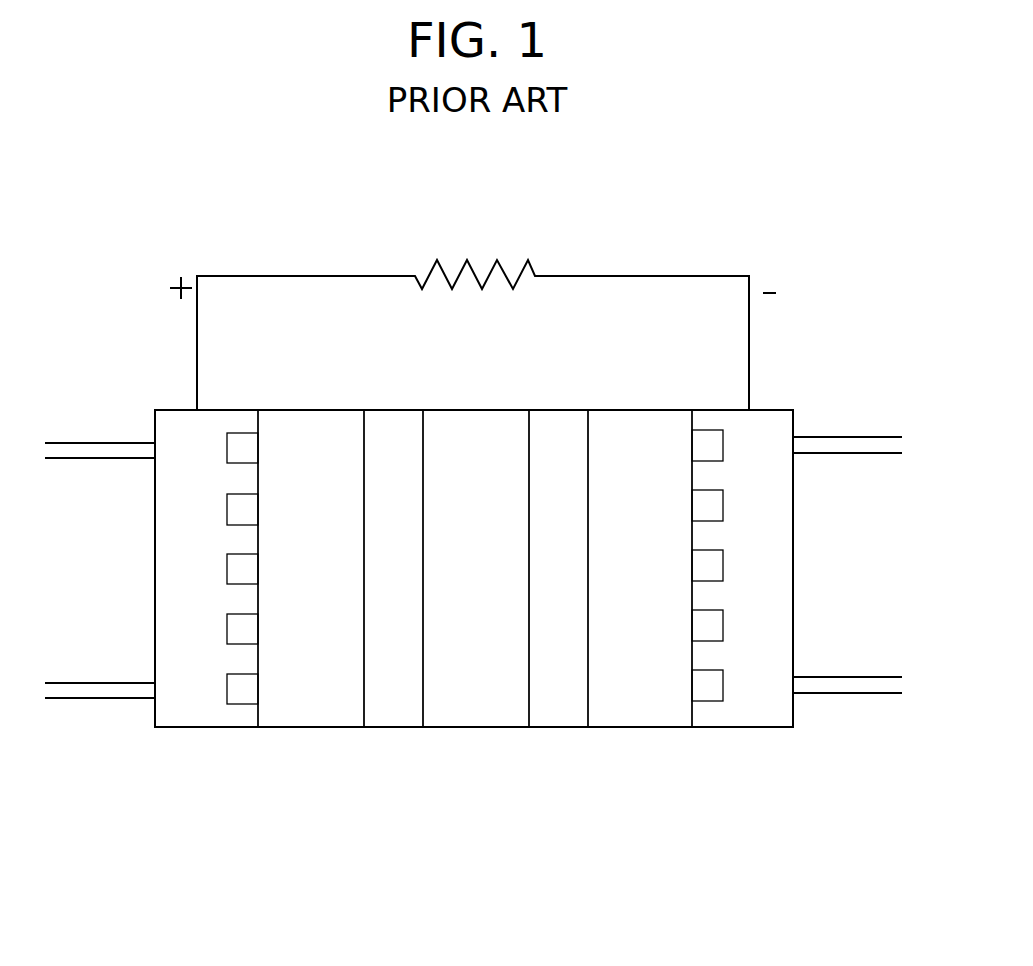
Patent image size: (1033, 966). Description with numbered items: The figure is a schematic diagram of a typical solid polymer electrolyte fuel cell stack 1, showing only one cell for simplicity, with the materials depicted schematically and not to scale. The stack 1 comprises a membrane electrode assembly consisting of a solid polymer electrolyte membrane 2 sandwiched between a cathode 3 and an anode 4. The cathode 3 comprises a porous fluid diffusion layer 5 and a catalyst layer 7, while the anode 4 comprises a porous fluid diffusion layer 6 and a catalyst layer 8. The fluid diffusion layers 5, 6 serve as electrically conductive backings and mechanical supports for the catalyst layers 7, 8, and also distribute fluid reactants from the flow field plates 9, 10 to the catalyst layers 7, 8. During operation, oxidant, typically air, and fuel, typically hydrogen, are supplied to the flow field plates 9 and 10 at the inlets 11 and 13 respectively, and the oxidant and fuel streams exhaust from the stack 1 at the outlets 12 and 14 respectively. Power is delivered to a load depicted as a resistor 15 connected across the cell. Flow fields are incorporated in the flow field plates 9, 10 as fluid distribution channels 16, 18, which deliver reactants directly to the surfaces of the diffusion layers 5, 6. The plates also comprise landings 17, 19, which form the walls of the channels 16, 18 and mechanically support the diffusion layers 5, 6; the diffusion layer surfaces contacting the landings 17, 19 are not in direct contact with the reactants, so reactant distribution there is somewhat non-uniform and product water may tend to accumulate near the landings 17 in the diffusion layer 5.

The stack 1 is at (836, 267).
The solid polymer electrolyte membrane 2 is at (477, 713).
The cathode 3 is at (341, 591).
The anode 4 is at (608, 591).
The porous fluid diffusion layer 5 is at (297, 427).
The porous fluid diffusion layer 6 is at (660, 427).
The catalyst layer 7 is at (393, 427).
The catalyst layer 8 is at (560, 427).
The flow field plate 9 is at (193, 715).
The flow field plate 10 is at (750, 713).
The inlet 11 is at (95, 450).
The outlet 12 is at (98, 692).
The inlet 13 is at (848, 447).
The outlet 14 is at (848, 685).
The resistor 15 is at (543, 262).
The fluid distribution channels 16 is at (237, 448).
The landings 17 is at (252, 480).
The fluid distribution channels 18 is at (715, 448).
The landings 19 is at (698, 480).